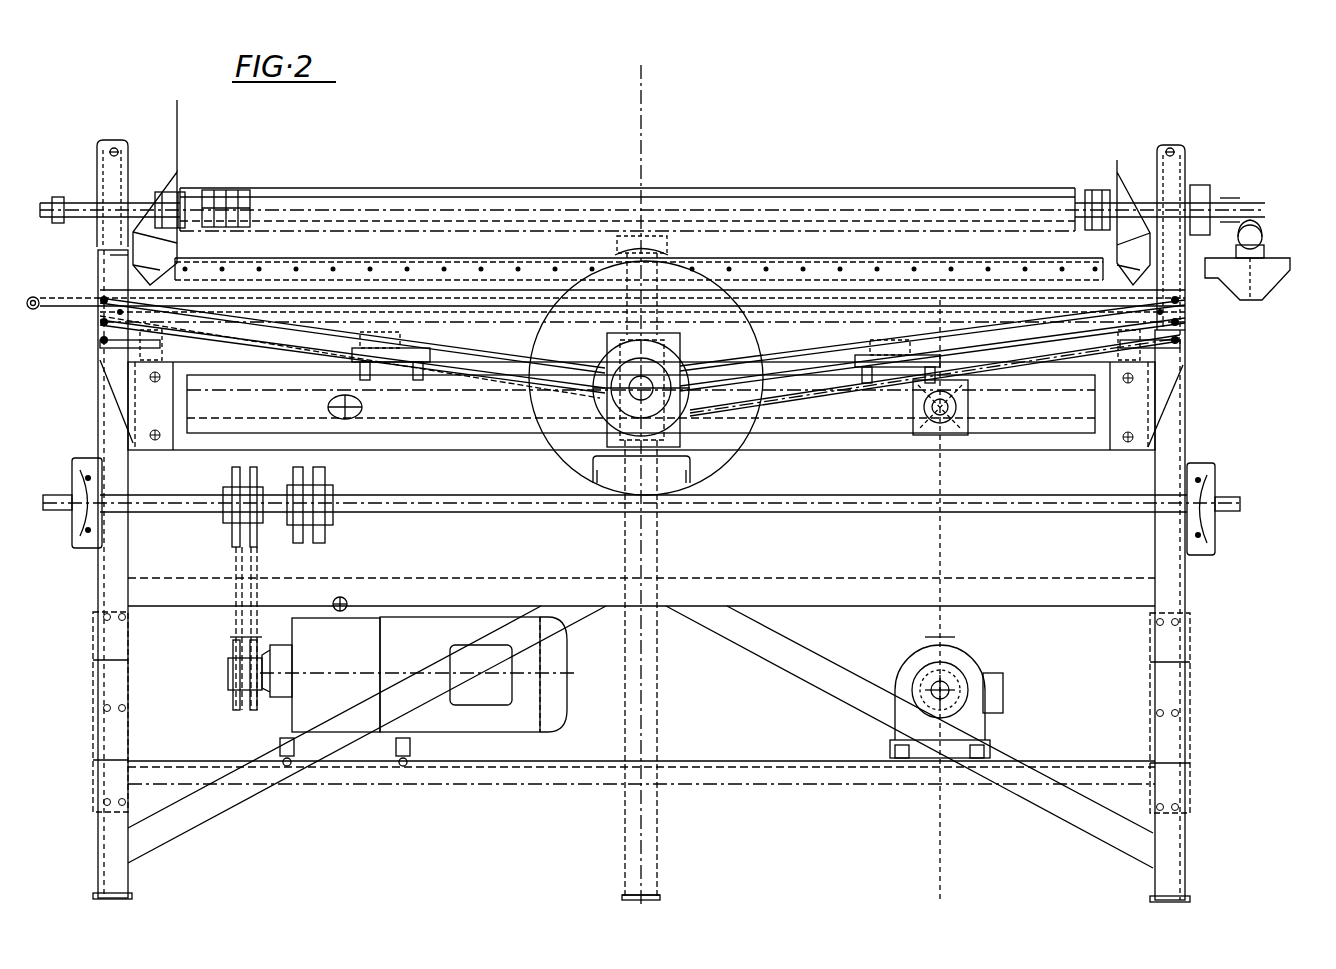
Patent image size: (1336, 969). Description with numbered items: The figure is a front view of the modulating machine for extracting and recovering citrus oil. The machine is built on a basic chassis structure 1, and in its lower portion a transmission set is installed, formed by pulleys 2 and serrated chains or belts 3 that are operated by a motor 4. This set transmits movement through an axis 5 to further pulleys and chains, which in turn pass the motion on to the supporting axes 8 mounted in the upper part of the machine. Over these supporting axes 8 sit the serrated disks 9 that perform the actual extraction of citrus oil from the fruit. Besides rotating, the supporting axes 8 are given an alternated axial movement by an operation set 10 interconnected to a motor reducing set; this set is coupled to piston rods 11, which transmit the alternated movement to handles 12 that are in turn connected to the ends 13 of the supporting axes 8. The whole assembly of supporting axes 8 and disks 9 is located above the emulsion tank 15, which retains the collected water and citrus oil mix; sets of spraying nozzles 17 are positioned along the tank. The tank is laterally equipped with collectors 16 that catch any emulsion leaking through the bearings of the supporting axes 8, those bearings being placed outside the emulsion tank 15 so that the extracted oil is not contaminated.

The chassis structure 1 is at (1165, 850).
The pulleys 2 is at (233, 528).
The serrated chains or belts 3 is at (235, 625).
The motor 4 is at (485, 715).
The axis 5 is at (406, 508).
The supporting axes 8 is at (428, 205).
The serrated disks 9 is at (234, 190).
The operation set 10 is at (680, 253).
The piston rods 11 is at (798, 400).
The handles 12 is at (1262, 298).
The ends 13 is at (1213, 203).
The emulsion tank 15 is at (928, 273).
The collectors 16 is at (1168, 172).
The spraying nozzles 17 is at (1107, 200).